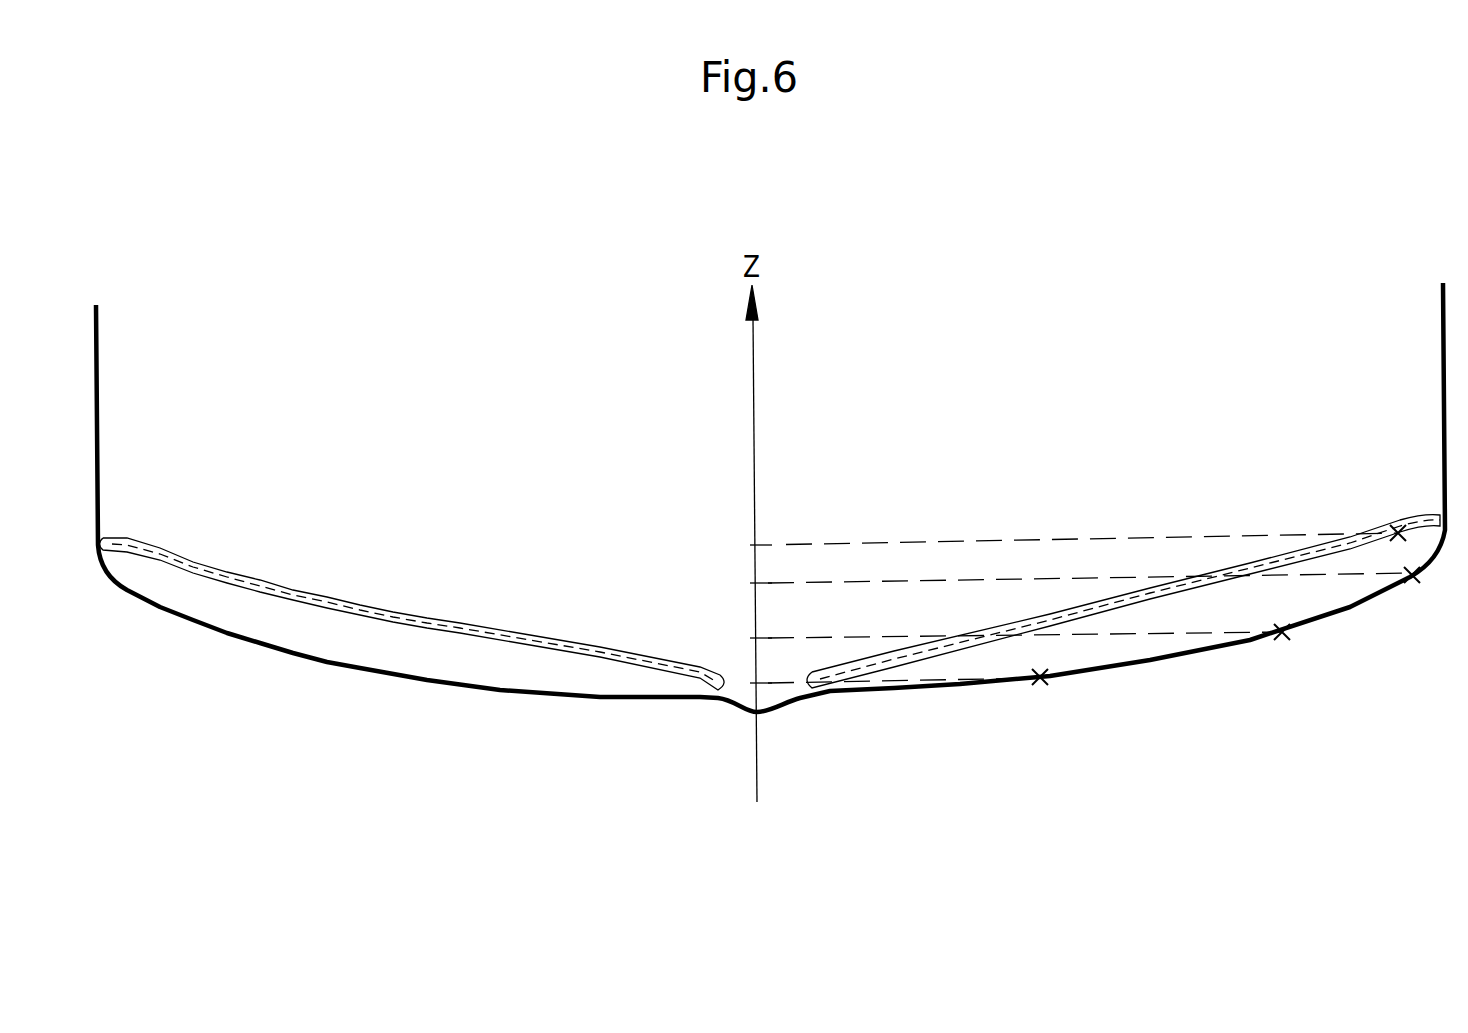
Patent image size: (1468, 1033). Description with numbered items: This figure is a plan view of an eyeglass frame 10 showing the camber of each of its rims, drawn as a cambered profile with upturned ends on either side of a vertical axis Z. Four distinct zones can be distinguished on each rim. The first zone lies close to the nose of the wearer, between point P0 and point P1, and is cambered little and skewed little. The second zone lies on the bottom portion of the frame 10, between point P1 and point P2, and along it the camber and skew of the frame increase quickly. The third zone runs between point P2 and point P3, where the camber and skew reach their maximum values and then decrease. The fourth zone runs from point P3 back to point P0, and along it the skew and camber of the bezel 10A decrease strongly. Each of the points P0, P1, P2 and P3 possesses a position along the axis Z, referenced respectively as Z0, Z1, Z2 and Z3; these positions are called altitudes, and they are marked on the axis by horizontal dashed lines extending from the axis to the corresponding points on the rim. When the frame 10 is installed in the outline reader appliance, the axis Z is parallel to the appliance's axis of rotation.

The frame 10 is at (770, 563).
The bezel 10A is at (372, 602).
The point P0 is at (1045, 702).
The point P1 is at (1286, 654).
The point P2 is at (1422, 595).
The point P3 is at (1400, 513).
The altitude Z0 is at (877, 662).
The altitude Z1 is at (998, 623).
The altitude Z2 is at (1063, 587).
The altitude Z3 is at (1056, 547).